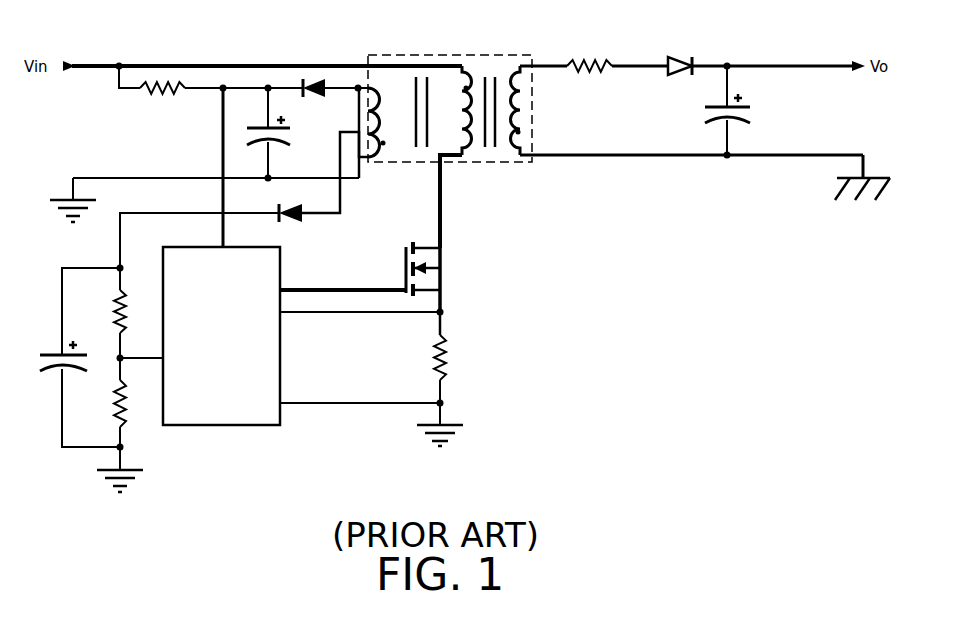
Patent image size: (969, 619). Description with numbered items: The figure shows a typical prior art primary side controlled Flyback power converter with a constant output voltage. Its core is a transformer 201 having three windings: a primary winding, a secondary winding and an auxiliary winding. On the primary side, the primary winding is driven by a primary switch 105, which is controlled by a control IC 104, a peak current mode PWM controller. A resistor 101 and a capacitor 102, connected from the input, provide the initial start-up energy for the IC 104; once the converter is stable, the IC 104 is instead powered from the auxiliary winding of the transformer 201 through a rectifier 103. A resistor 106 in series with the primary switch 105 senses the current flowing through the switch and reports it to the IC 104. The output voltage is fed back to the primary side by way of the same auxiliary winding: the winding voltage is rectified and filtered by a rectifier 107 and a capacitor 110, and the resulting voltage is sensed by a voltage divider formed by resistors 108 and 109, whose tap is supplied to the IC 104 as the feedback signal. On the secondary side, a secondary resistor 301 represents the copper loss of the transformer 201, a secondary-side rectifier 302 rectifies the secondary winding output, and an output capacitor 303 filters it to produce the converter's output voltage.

The resistor 101 is at (165, 96).
The capacitor 102 is at (290, 136).
The rectifier 103 is at (317, 98).
The control IC 104 is at (221, 336).
The primary switch 105 is at (399, 264).
The resistor 106 is at (430, 371).
The rectifier 107 is at (305, 216).
The voltage divider resistor 108 is at (115, 325).
The voltage divider resistor 109 is at (113, 416).
The capacitor 110 is at (42, 371).
The transformer 201 is at (503, 55).
The secondary resistor 301 is at (589, 60).
The secondary-side rectifier 302 is at (678, 59).
The output capacitor 303 is at (721, 122).